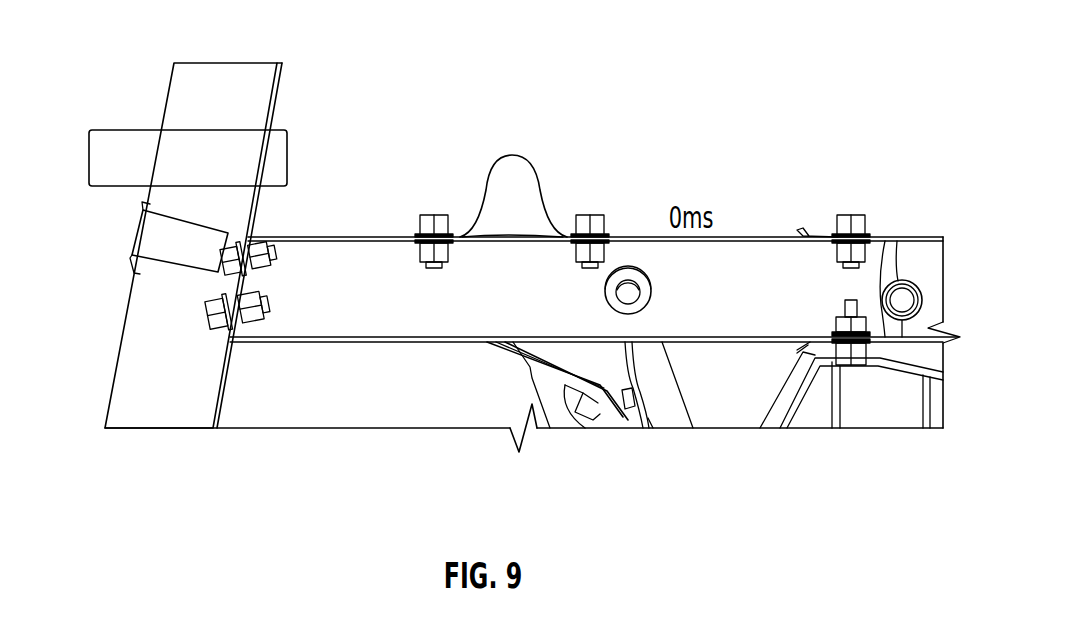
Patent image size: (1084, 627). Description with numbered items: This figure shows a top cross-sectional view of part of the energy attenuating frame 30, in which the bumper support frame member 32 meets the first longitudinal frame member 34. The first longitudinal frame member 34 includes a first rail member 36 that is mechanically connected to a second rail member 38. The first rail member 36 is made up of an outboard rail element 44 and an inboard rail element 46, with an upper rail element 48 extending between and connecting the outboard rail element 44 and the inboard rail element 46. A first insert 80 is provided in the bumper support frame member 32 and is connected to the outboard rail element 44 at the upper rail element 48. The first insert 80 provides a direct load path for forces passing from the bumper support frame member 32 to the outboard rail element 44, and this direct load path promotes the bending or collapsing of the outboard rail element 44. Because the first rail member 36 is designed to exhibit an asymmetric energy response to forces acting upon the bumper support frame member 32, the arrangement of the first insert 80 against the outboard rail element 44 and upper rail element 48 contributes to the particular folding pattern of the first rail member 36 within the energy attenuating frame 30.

The energy attenuating frame 30 is at (884, 415).
The bumper support frame member 32 is at (106, 374).
The first longitudinal frame member 34 is at (641, 190).
The first rail member 36 is at (494, 412).
The second rail member 38 is at (922, 218).
The outboard rail element 44 is at (383, 238).
The inboard rail element 46 is at (330, 346).
The upper rail element 48 is at (312, 250).
The first insert 80 is at (145, 240).